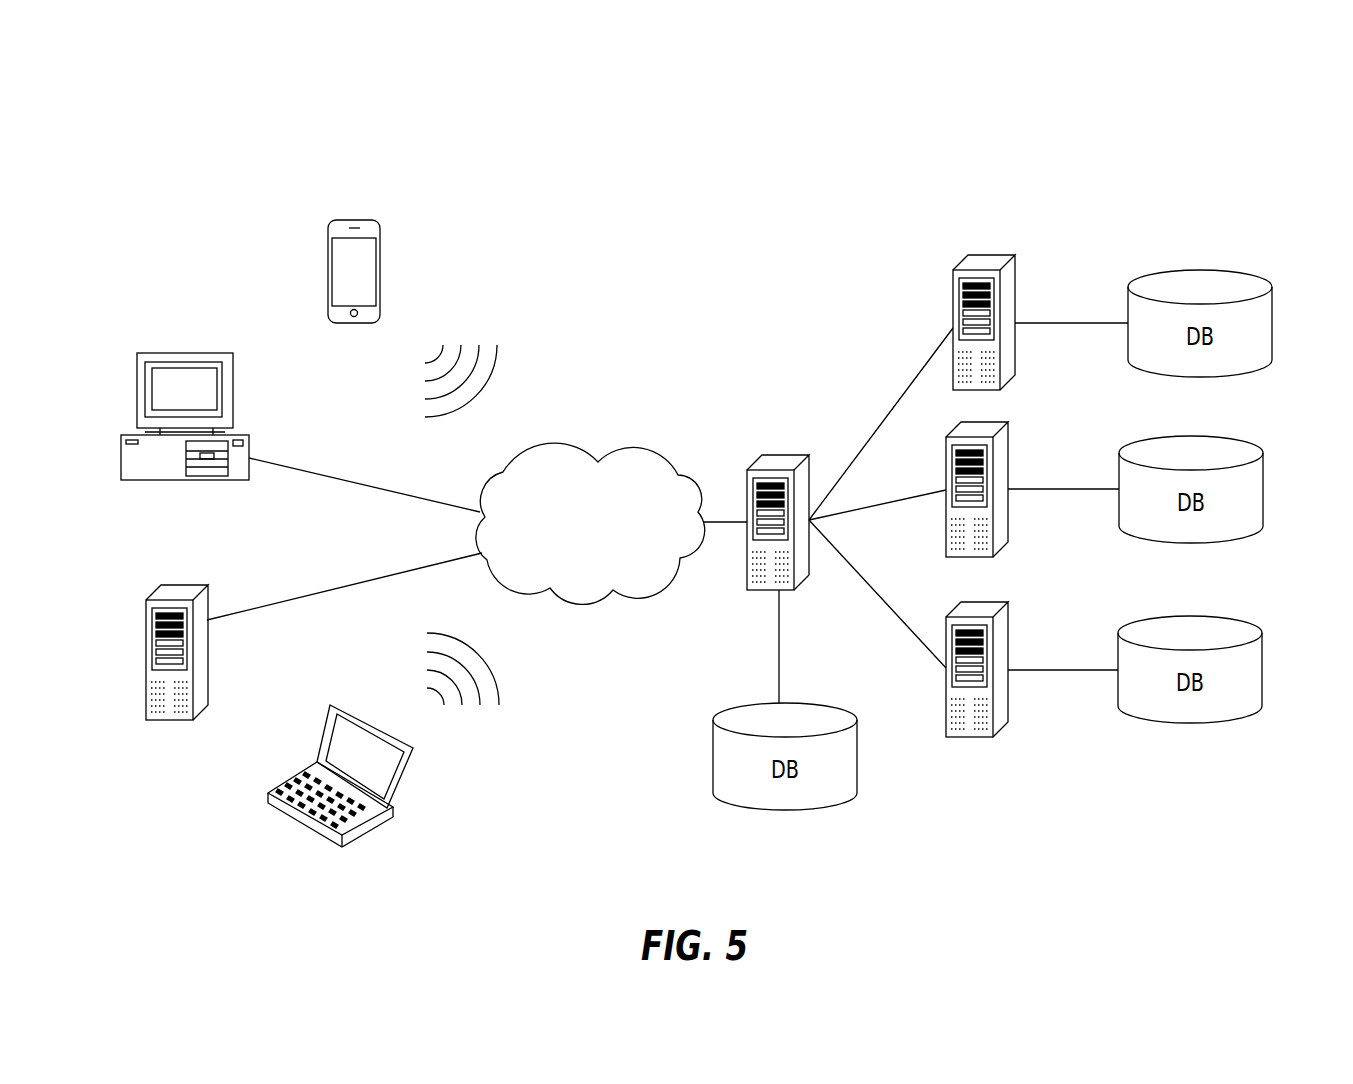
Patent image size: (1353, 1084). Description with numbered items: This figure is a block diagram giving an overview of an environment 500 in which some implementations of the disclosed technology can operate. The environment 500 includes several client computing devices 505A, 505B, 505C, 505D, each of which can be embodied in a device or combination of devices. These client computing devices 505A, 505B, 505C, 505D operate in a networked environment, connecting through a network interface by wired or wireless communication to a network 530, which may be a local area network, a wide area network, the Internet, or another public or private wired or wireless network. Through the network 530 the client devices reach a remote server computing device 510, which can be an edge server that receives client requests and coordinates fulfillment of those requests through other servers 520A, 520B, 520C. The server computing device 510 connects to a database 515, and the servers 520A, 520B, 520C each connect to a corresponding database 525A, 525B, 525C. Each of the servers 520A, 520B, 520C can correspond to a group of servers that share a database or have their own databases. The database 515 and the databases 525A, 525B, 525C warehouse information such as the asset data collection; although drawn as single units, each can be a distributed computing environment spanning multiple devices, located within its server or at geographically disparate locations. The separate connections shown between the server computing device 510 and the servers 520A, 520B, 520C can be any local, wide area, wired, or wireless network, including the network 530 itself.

The environment 500 is at (1072, 137).
The client computing device 505A is at (372, 221).
The client computing device 505B is at (228, 350).
The client computing device 505C is at (200, 584).
The client computing device 505D is at (408, 778).
The network 530 is at (642, 445).
The server computing device 510 is at (788, 452).
The database 515 is at (835, 705).
The server 520A is at (1008, 258).
The database 525A is at (1195, 270).
The server 520B is at (1003, 422).
The database 525B is at (1185, 436).
The server 520C is at (1003, 602).
The database 525C is at (1185, 616).